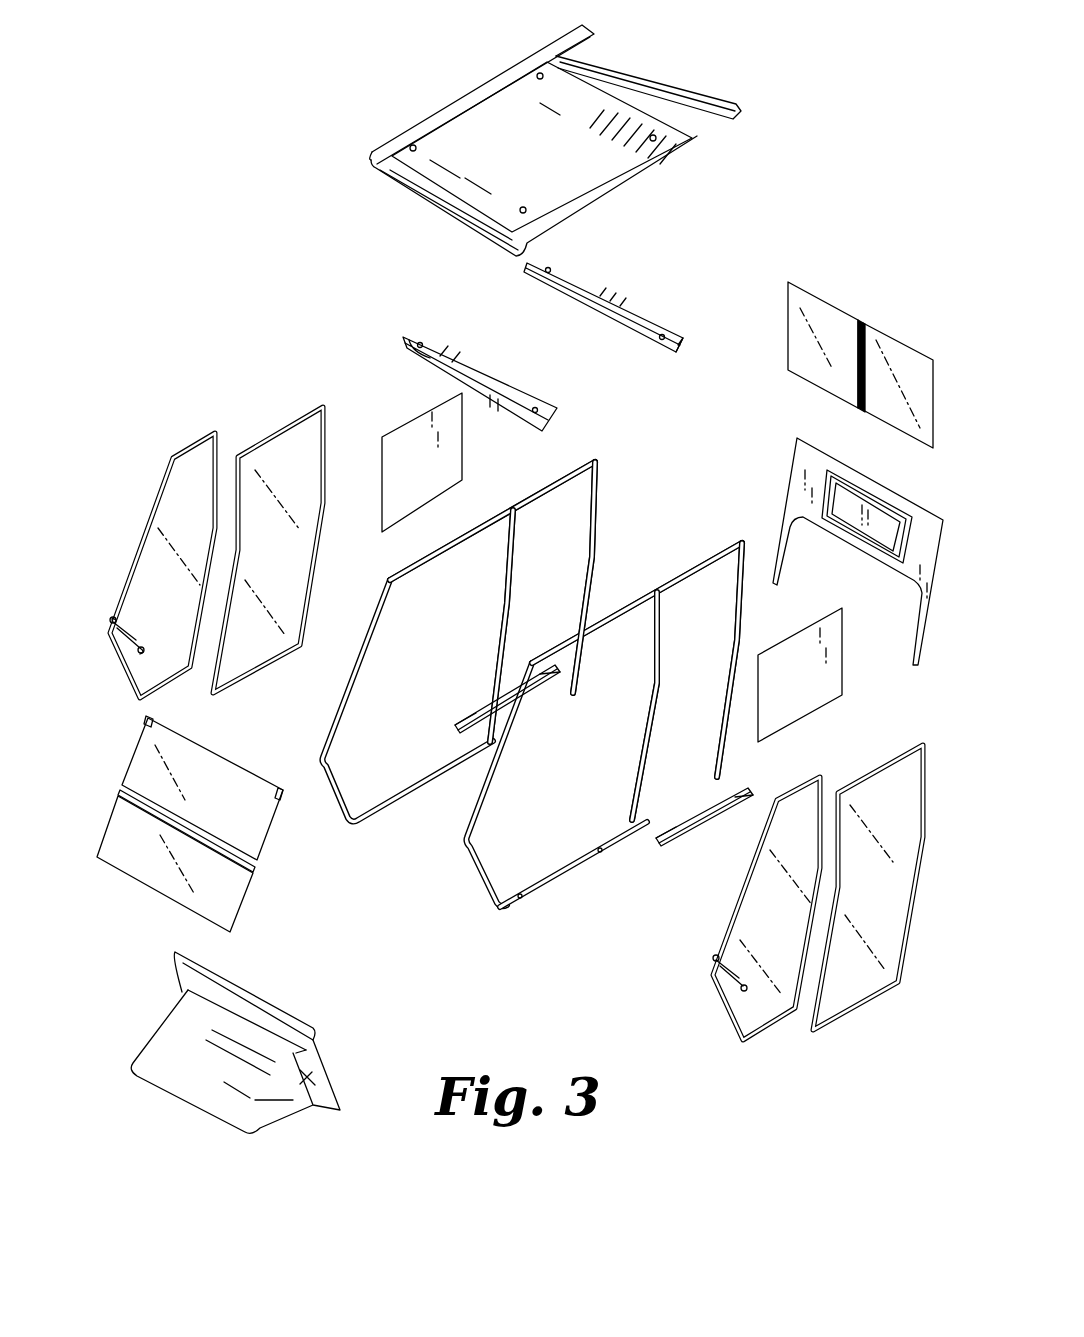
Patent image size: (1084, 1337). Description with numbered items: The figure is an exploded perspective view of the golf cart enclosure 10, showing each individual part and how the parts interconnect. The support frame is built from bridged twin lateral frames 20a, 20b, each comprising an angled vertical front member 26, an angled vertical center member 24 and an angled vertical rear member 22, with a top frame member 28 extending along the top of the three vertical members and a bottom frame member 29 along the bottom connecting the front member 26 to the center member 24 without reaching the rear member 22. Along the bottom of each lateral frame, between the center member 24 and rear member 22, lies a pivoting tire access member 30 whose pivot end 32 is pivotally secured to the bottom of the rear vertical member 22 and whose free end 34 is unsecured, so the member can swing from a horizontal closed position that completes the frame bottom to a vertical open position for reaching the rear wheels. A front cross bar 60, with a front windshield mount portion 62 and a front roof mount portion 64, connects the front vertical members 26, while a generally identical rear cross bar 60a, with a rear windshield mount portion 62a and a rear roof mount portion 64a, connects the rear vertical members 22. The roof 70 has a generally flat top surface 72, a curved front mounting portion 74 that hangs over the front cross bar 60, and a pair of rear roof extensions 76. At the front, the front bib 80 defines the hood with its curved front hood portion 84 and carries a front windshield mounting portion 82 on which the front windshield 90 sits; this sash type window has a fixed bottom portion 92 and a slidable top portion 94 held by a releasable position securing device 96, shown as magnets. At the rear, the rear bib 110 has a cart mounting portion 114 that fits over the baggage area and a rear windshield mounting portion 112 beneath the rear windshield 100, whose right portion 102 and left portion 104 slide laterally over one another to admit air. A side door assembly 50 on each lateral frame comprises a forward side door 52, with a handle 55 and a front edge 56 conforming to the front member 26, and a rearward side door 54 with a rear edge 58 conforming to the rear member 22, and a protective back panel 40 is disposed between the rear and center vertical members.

The golf cart enclosure 10 is at (205, 176).
The lateral frame 20a is at (622, 691).
The lateral frame 20b is at (600, 461).
The rear vertical member 22 is at (597, 540).
The center vertical member 24 is at (518, 540).
The front vertical member 26 is at (491, 781).
The top frame member 28 is at (479, 513).
The bottom frame member 29 is at (600, 851).
The pivoting tire access member 30 is at (595, 783).
The pivot end 32 is at (557, 670).
The free end 34 is at (452, 723).
The protective back panel 40 is at (391, 485).
The side door assembly 50 is at (518, 731).
The forward side door 52 is at (457, 737).
The rearward side door 54 is at (578, 718).
The handle 55 is at (134, 650).
The front edge 56 is at (143, 544).
The rear edge 58 is at (326, 482).
The front cross bar 60 is at (439, 343).
The rear cross bar 60a is at (626, 297).
The front windshield mount portion 62 is at (443, 368).
The rear windshield mount portion 62a is at (694, 346).
The front roof mount portion 64 is at (478, 373).
The rear roof mount portion 64a is at (598, 305).
The roof 70 is at (555, 134).
The top surface 72 is at (502, 148).
The front mounting portion 74 is at (535, 244).
The rear roof extensions 76 is at (556, 56).
The front bib 80 is at (225, 1035).
The front windshield mounting portion 82 is at (271, 996).
The curved front hood portion 84 is at (198, 1074).
The front windshield 90 is at (222, 809).
The bottom portion 92 is at (114, 861).
The top portion 94 is at (201, 799).
The releasable position securing device 96 is at (153, 718).
The rear windshield 100 is at (860, 326).
The right portion 102 is at (898, 370).
The left portion 104 is at (830, 335).
The rear bib 110 is at (834, 545).
The rear windshield mounting portion 112 is at (876, 500).
The cart mounting portion 114 is at (845, 542).